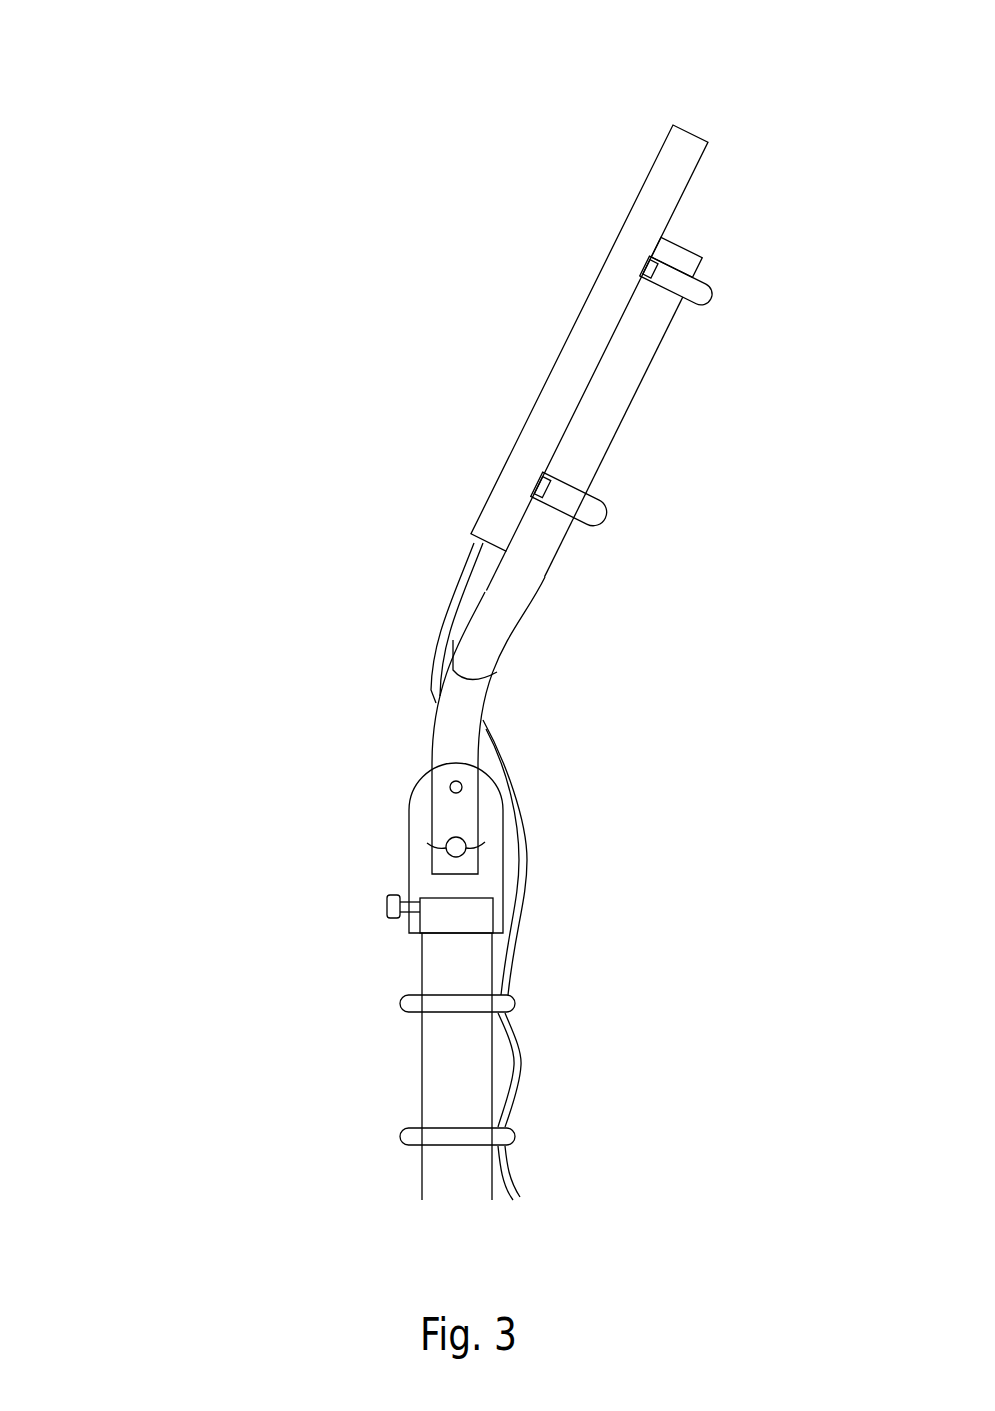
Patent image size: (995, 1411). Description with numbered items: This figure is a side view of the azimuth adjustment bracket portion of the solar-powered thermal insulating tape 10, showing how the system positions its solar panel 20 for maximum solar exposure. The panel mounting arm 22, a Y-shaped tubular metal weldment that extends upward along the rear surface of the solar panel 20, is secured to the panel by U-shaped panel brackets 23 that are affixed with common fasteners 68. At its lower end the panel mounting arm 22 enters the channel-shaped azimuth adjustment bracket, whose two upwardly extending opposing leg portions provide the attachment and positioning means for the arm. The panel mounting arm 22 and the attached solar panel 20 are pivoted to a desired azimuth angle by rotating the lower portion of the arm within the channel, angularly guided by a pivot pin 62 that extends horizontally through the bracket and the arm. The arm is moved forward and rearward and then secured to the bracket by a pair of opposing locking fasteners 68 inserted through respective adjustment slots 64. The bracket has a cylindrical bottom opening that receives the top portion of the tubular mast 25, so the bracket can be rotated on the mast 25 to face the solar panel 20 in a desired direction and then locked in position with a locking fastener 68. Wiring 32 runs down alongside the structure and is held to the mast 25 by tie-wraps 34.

The solar-powered thermal insulating tape 10 is at (93, 117).
The solar panel 20 is at (603, 265).
The panel mounting arm 22 is at (461, 697).
The panel bracket 23 is at (588, 507).
The mast 25 is at (420, 1065).
The wiring 32 is at (493, 752).
The tie-wrap 34 is at (505, 1130).
The pivot pin 62 is at (462, 788).
The adjustment slot 64 is at (452, 847).
The fastener 68 is at (645, 278).